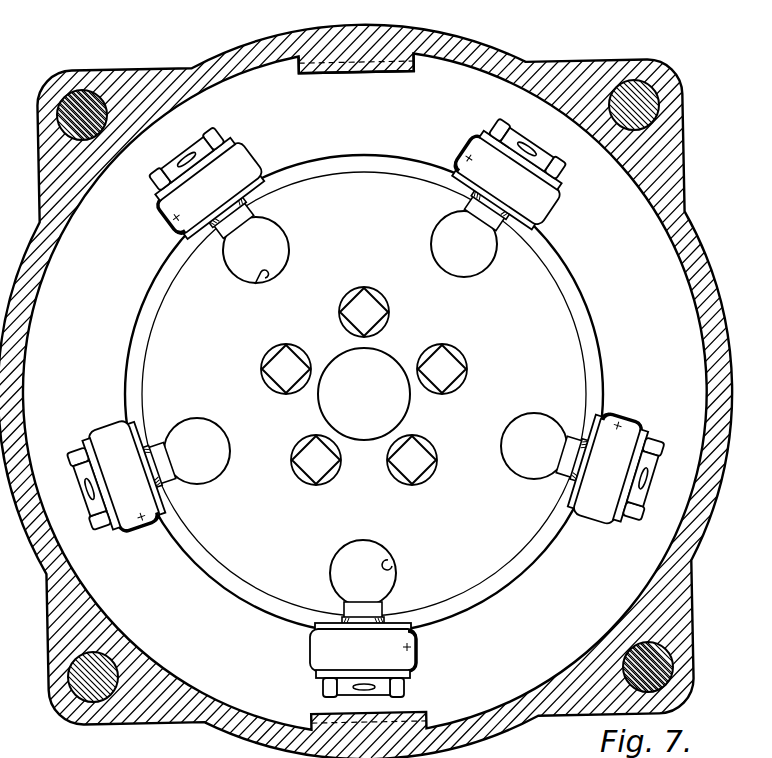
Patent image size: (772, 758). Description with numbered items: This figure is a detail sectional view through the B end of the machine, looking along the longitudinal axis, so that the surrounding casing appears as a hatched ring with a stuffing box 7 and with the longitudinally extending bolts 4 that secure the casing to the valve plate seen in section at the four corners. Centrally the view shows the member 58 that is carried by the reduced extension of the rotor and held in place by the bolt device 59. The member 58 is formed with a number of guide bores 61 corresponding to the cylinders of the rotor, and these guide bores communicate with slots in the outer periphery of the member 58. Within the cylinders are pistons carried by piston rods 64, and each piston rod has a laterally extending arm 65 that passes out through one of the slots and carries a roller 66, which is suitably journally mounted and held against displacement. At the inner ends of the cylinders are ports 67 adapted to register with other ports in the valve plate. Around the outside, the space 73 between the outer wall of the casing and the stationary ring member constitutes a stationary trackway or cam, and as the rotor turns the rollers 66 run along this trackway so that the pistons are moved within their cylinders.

The stuffing box 7 is at (200, 63).
The space 73 is at (450, 58).
The B end B is at (506, 62).
The bolts 4 is at (683, 655).
The member 58 is at (364, 394).
The bolt device 59 is at (388, 310).
The piston rods 64 is at (273, 253).
The rollers 66 is at (253, 153).
The laterally extending arms 65 is at (250, 207).
The ports 67 is at (227, 237).
The guide bores 61 is at (256, 282).